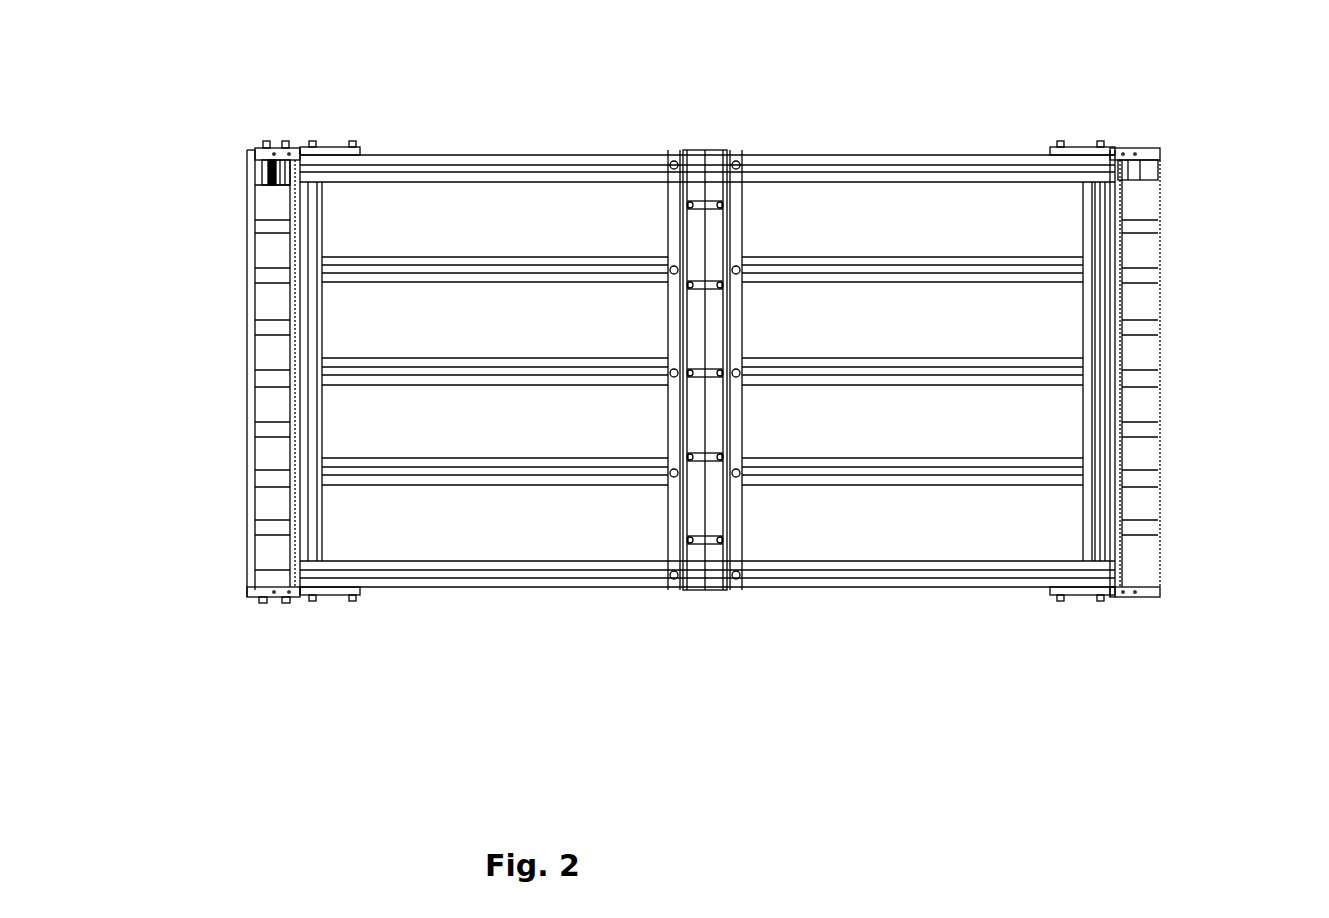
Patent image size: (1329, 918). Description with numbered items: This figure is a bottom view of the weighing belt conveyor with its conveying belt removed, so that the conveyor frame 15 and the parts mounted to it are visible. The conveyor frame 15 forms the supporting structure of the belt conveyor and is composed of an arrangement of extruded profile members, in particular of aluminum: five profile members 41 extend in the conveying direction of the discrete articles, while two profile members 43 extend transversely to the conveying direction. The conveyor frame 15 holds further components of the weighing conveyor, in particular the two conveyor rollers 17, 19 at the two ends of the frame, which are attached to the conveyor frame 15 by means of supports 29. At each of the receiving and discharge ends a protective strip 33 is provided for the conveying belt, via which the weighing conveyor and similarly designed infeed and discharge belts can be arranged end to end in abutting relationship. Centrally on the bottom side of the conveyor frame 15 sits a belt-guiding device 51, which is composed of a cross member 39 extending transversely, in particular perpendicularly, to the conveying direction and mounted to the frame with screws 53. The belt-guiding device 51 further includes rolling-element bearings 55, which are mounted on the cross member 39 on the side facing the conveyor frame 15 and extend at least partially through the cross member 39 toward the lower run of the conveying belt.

The conveyor frame 15 is at (714, 385).
The conveyor roller 17 is at (270, 355).
The conveyor roller 19 is at (1140, 405).
The support 29 is at (332, 148).
The protective strip 33 is at (250, 472).
The cross member 39 is at (700, 158).
The profile member 41 is at (527, 158).
The profile member 43 is at (313, 283).
The belt-guiding device 51 is at (739, 390).
The screw 53 is at (668, 580).
The rolling-element bearing 55 is at (718, 300).